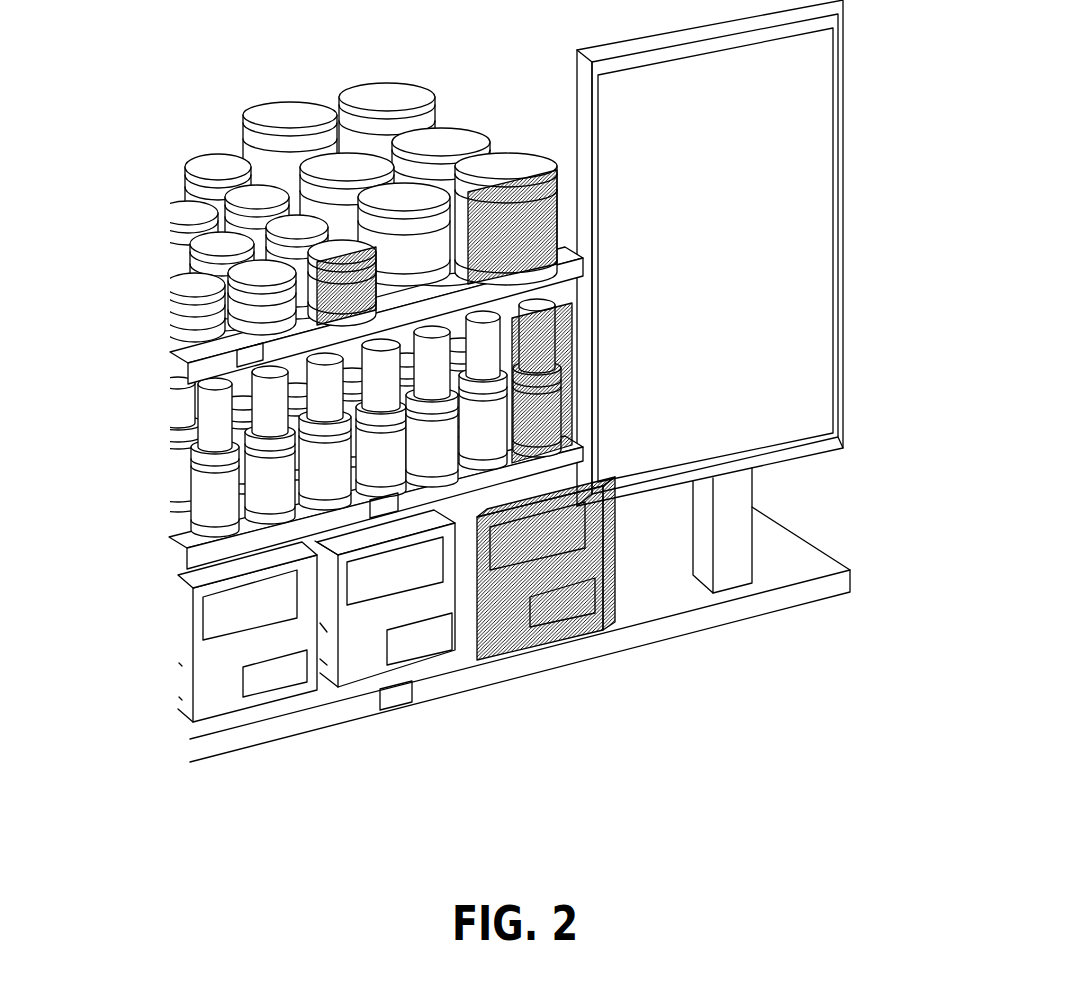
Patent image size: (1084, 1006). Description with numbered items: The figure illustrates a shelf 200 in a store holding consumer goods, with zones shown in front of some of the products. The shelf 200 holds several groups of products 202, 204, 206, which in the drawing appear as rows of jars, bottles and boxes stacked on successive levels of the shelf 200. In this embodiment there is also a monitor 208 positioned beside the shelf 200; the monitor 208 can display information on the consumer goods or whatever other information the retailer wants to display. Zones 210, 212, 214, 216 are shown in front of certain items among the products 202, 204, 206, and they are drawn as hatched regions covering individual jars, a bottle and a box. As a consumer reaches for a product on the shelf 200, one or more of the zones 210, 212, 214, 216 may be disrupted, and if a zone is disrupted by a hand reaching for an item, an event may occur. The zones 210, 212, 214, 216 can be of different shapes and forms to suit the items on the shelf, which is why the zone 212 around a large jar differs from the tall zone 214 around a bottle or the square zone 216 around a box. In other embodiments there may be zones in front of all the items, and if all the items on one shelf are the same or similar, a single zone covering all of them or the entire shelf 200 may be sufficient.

The shelf 200 is at (352, 784).
The products 202 is at (423, 48).
The products 204 is at (168, 383).
The products 206 is at (168, 577).
The monitor 208 is at (843, 272).
The zone 210 is at (317, 301).
The zone 212 is at (558, 217).
The zone 214 is at (572, 373).
The zone 216 is at (616, 562).